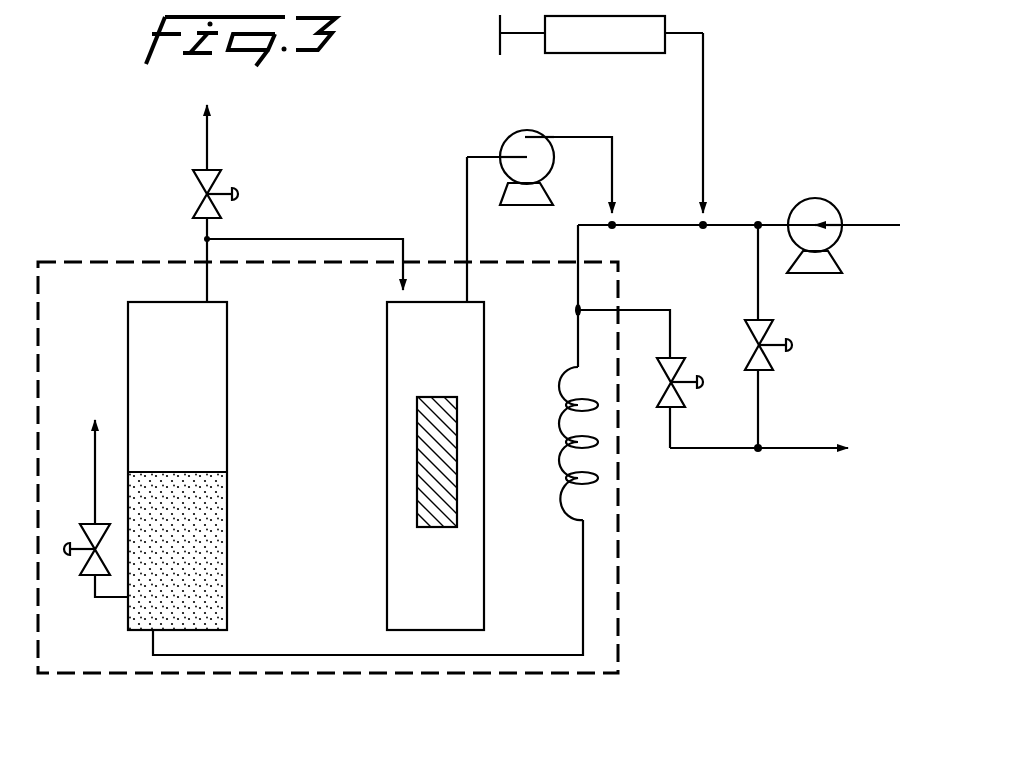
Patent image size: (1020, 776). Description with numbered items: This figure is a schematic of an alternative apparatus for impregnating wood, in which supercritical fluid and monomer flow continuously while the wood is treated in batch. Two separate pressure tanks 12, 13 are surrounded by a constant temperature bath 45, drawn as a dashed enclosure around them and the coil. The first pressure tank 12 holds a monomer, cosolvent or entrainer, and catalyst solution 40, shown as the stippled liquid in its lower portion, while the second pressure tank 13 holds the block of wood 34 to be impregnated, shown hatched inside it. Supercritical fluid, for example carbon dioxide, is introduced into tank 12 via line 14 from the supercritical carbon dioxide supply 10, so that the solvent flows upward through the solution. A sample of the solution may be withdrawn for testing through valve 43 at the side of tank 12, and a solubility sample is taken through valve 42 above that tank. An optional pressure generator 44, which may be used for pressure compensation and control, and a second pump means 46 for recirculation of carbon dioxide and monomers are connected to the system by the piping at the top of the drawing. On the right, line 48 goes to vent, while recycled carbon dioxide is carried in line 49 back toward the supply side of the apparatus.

The supercritical carbon dioxide supply 10 is at (834, 194).
The pressure tank 12 is at (228, 382).
The pressure tank 13 is at (385, 362).
The line 14 is at (280, 652).
The block of wood 34 is at (425, 443).
The monomer, cosolvent or entrainer, and catalyst solution 40 is at (205, 550).
The valve 42 is at (203, 182).
The valve 43 is at (92, 576).
The pressure generator 44 is at (623, 43).
The constant temperature bath 45 is at (600, 557).
The second pump means 46 is at (510, 142).
The line 48 is at (695, 448).
The line 49 is at (760, 405).